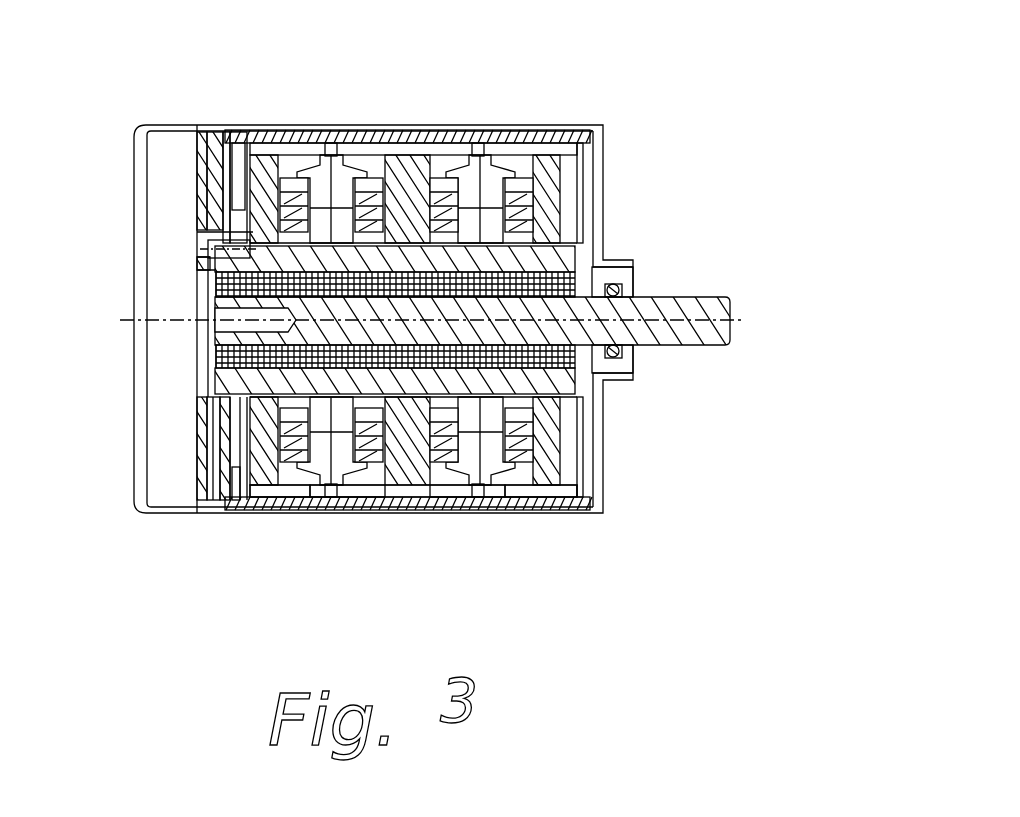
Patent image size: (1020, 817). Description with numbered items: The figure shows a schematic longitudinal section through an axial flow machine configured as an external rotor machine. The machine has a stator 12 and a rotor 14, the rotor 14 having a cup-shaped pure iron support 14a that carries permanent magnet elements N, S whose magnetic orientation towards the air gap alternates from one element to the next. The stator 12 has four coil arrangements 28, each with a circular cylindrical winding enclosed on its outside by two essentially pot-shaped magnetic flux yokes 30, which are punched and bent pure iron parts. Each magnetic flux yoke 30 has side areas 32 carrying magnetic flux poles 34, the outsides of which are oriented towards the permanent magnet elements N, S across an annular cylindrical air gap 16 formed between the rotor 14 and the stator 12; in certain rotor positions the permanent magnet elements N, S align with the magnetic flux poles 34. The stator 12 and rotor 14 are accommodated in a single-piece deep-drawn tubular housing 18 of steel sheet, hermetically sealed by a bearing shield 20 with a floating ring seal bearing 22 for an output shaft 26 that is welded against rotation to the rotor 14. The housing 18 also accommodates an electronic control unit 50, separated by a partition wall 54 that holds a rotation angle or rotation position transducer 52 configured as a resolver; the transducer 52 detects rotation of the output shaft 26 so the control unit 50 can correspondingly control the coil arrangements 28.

The stator 12 is at (553, 190).
The rotor 14 is at (604, 132).
The cup-shaped pure iron support 14a is at (400, 137).
The annular cylindrical air gap 16 is at (478, 144).
The tubular housing 18 is at (305, 128).
The bearing shield 20 is at (604, 180).
The floating ring seal bearing 22 is at (617, 283).
The output shaft 26 is at (650, 325).
The coil arrangement 28 is at (523, 428).
The pot-shaped magnetic flux yoke 30 is at (547, 463).
The side area 32 is at (540, 492).
The magnetic flux pole 34 is at (447, 490).
The permanent magnet element N is at (268, 487).
The permanent magnet element S is at (355, 490).
The electronic control unit 50 is at (165, 215).
The rotation position transducer 52 is at (222, 140).
The partition wall 54 is at (200, 135).